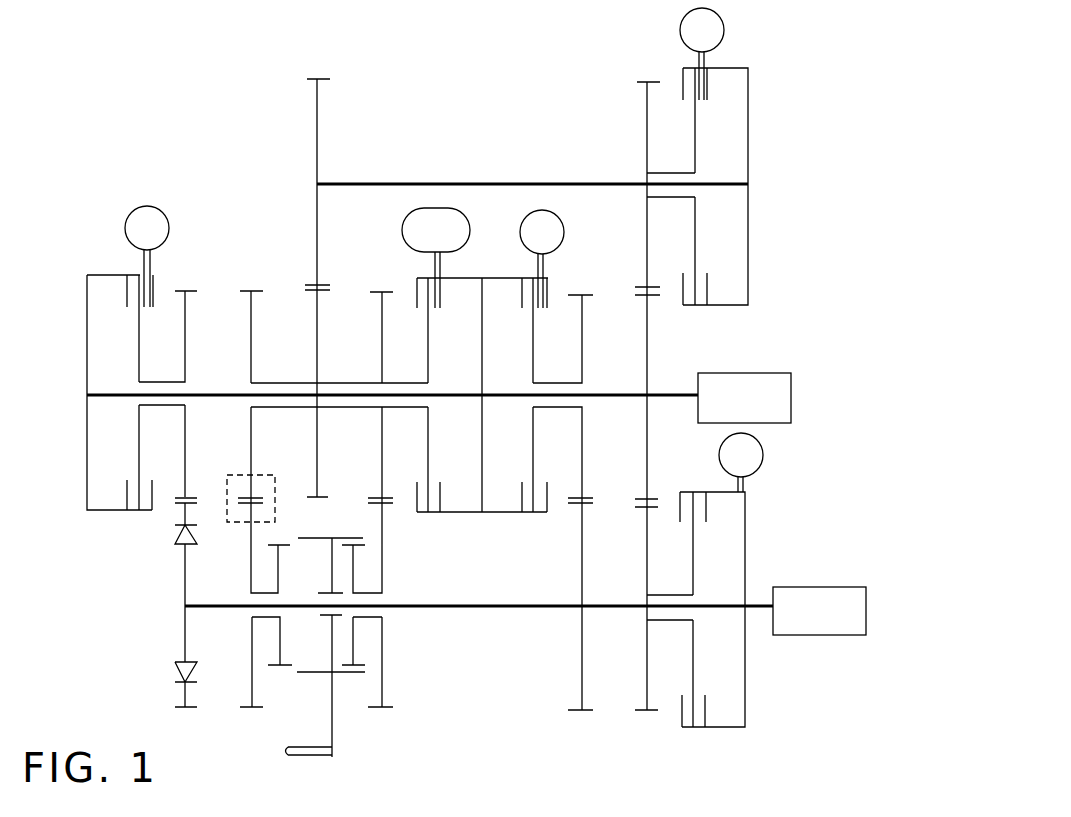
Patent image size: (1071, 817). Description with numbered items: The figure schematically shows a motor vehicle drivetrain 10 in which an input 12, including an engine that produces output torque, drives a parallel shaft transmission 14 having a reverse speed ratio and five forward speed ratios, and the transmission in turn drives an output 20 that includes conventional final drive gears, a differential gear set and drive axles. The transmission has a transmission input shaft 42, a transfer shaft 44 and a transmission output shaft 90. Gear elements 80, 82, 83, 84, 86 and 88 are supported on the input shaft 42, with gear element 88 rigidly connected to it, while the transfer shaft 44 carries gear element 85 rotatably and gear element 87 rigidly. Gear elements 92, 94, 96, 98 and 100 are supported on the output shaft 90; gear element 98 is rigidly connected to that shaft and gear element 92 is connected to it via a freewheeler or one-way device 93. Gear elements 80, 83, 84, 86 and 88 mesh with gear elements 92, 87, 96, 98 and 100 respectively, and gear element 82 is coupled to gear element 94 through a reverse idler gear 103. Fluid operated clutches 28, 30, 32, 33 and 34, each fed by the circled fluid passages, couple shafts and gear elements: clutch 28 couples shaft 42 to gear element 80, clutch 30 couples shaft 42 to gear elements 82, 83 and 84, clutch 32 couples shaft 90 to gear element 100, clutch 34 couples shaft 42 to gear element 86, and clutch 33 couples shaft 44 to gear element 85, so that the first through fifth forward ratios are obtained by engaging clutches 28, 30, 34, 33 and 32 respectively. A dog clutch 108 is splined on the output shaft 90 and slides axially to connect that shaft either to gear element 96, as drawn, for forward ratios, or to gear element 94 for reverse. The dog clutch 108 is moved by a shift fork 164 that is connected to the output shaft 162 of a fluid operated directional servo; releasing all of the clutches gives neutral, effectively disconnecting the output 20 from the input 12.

The motor vehicle drivetrain 10 is at (200, 175).
The input 12 is at (740, 376).
The parallel shaft transmission 14 is at (72, 347).
The output 20 is at (823, 590).
The clutch 28 is at (87, 302).
The clutch 30 is at (417, 283).
The clutch 32 is at (746, 662).
The clutch 33 is at (749, 132).
The clutch 34 is at (548, 283).
The transmission input shaft 42 is at (612, 402).
The transfer shaft 44 is at (447, 182).
The gear element 80 is at (187, 315).
The gear element 82 is at (249, 318).
The gear element 83 is at (315, 318).
The gear element 84 is at (380, 315).
The gear element 85 is at (645, 125).
The gear element 86 is at (587, 320).
The gear element 87 is at (316, 128).
The gear element 88 is at (645, 322).
The transmission output shaft 90 is at (478, 608).
The gear element 92 is at (187, 513).
The one-way device 93 is at (177, 543).
The gear element 94 is at (248, 678).
The gear element 96 is at (383, 672).
The gear element 98 is at (578, 675).
The gear element 100 is at (645, 560).
The reverse idler gear 103 is at (238, 475).
The dog clutch 108 is at (345, 675).
The output shaft 162 is at (310, 758).
The shift fork 164 is at (330, 687).